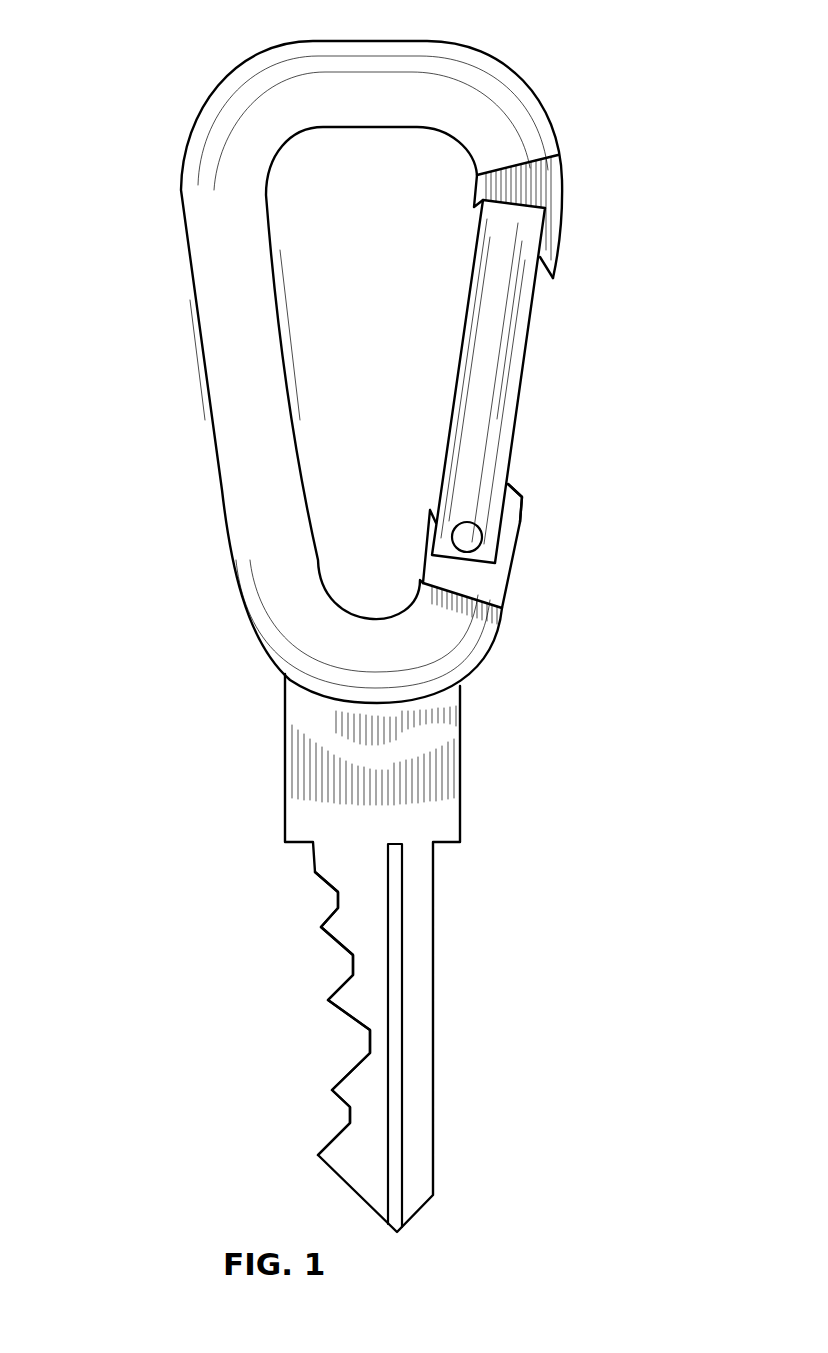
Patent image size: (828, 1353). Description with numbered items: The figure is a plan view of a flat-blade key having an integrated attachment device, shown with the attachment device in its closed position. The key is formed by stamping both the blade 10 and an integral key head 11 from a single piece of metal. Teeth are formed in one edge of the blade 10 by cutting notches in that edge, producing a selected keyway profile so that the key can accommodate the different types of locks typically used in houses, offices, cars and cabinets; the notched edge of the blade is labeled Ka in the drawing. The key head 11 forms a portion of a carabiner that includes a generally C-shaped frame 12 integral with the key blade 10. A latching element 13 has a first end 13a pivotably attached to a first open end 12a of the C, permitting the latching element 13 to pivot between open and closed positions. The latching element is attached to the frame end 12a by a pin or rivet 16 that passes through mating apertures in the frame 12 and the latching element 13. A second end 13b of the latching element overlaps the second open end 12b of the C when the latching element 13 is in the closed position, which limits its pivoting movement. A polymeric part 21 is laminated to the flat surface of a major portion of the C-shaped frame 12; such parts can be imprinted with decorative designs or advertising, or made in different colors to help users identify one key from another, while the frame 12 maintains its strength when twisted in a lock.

The blade 10 is at (433, 875).
The key head 11 is at (170, 405).
The C-shaped frame 12 is at (180, 203).
The first open end of the C 12a is at (510, 583).
The second open end of the C 12b is at (562, 172).
The latching element 13 is at (523, 375).
The first end of the latching element 13a is at (505, 510).
The second end of the latching element 13b is at (555, 261).
The pin or rivet 16 is at (483, 543).
The polymeric part 21 is at (222, 317).
The serrated edge of key Ka is at (345, 1018).